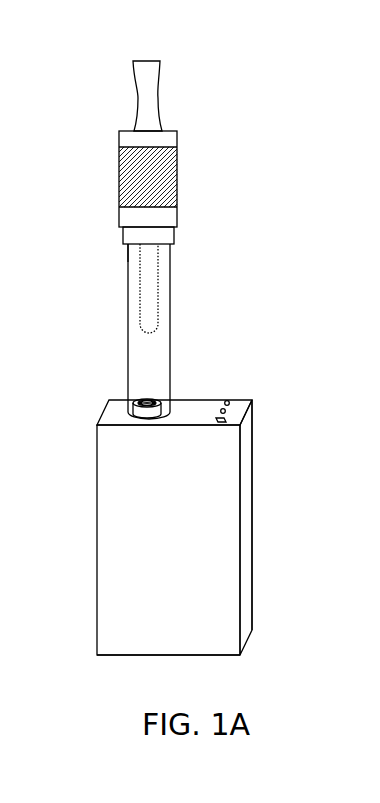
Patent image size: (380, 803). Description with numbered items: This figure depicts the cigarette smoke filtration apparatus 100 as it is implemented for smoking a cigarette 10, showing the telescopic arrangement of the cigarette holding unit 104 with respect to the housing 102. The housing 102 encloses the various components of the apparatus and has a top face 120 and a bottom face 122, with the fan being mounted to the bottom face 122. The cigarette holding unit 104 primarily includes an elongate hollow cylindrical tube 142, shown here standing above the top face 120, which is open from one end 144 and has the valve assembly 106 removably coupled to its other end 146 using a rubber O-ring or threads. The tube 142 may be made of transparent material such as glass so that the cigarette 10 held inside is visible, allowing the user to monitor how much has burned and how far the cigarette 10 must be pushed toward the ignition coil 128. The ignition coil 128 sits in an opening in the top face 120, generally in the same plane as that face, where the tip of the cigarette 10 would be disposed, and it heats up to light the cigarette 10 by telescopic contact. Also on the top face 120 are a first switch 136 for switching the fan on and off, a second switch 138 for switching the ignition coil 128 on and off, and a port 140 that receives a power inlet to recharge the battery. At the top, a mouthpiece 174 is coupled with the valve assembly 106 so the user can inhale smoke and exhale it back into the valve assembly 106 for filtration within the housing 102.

The cigarette smoke filtration apparatus 100 is at (288, 64).
The housing 102 is at (266, 484).
The cigarette holding unit 104 is at (188, 313).
The valve assembly 106 is at (198, 172).
The cigarette 10 is at (151, 263).
The top face 120 is at (190, 408).
The bottom face 122 is at (205, 657).
The ignition coil 128 is at (139, 402).
The first switch 136 is at (232, 400).
The second switch 138 is at (255, 410).
The port 140 is at (255, 428).
The tube 142 is at (128, 300).
The end 144 is at (132, 417).
The other end 146 is at (127, 252).
The mouthpiece 174 is at (161, 106).